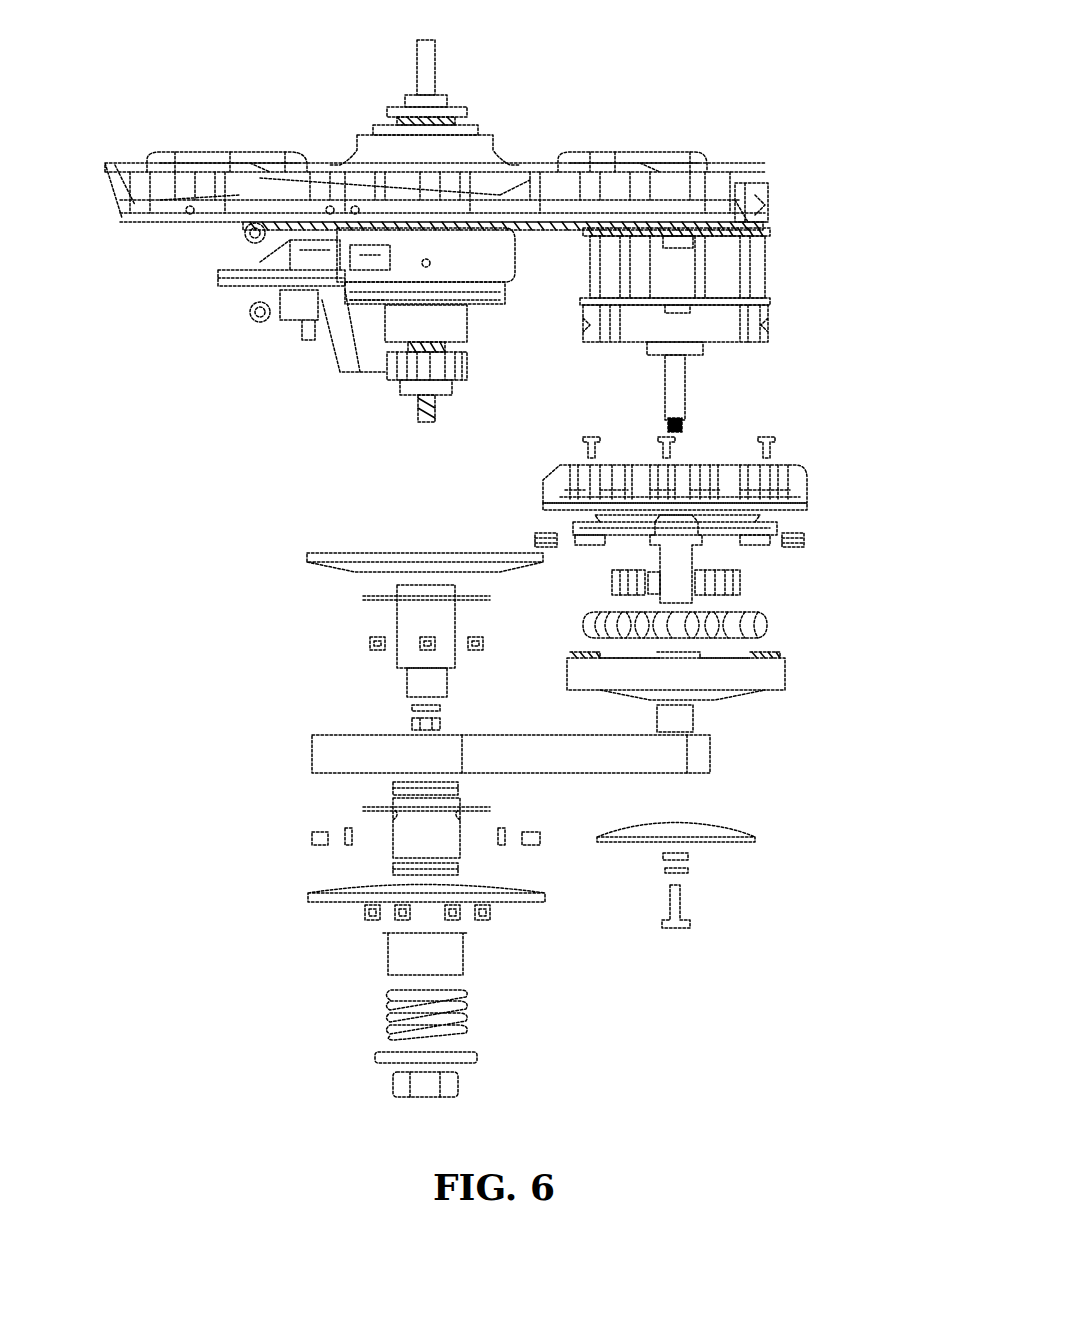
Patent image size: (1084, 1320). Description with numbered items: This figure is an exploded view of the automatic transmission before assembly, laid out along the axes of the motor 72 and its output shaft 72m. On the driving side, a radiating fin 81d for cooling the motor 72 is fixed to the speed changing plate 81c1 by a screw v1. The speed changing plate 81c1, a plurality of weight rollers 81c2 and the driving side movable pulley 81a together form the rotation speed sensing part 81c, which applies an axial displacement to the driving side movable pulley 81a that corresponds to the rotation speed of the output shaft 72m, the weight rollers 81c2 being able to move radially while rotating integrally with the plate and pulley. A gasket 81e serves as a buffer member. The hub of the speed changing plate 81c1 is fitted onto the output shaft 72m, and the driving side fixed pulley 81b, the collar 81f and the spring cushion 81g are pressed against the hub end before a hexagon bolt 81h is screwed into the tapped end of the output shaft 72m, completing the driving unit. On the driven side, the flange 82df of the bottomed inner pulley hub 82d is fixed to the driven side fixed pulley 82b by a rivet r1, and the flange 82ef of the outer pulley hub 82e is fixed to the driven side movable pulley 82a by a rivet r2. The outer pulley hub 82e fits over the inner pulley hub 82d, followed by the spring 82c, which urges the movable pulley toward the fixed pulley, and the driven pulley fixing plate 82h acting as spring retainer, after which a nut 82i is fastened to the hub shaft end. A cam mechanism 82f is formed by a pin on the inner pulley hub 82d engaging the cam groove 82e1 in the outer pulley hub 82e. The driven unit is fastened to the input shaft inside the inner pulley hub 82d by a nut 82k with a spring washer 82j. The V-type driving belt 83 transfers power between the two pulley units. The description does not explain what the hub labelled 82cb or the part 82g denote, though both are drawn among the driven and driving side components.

The motor 72 is at (780, 262).
The output shaft 72m is at (692, 385).
The screw v1 is at (590, 437).
The radiating fin 81d is at (805, 462).
The speed changing plate 81c1 is at (785, 530).
The hub 82cb is at (660, 545).
The gasket 81e is at (745, 575).
The driven side fixed pulley 82b is at (310, 555).
The flange 82df is at (367, 598).
The inner pulley hub 82d is at (465, 625).
The rivet r1 is at (370, 645).
The rotation speed sensing part 81c is at (578, 632).
The weight roller 81c2 is at (770, 625).
The driving side movable pulley 81a is at (785, 680).
The spring washer 82j is at (408, 708).
The nut 82k is at (408, 725).
The V-type driving belt 83 is at (710, 760).
The flange 82ef is at (362, 809).
The outer pulley hub 82e is at (390, 836).
The cam groove 82e1 is at (466, 832).
The cam mechanism 82f is at (515, 808).
The driven side movable pulley 82a is at (310, 888).
The rivet r2 is at (365, 910).
The collar 82g is at (388, 950).
The spring 82c is at (386, 1010).
The driven pulley fixing plate 82h is at (372, 1056).
The nut 82i is at (392, 1090).
The driving side fixed pulley 81b is at (760, 835).
The collar 81f is at (695, 860).
The spring cushion 81g is at (695, 875).
The hexagon bolt 81h is at (688, 930).